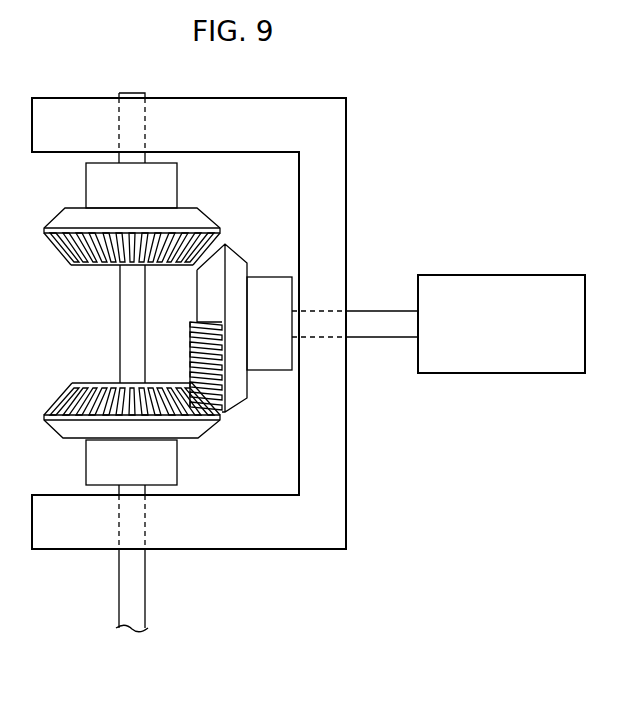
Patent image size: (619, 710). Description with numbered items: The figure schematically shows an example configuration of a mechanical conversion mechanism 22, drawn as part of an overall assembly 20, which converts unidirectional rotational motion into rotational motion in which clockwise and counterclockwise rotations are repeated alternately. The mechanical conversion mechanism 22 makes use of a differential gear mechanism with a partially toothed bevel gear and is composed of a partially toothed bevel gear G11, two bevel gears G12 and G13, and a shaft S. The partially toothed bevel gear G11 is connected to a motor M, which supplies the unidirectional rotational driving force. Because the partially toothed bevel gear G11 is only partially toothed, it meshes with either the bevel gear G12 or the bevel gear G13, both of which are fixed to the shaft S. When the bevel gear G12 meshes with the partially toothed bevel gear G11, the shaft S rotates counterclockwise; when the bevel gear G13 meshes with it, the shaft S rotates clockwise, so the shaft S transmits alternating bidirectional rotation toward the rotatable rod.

The drive device 20 is at (534, 102).
The mechanical conversion mechanism 22 is at (345, 640).
The partially toothed bevel gear G11 is at (268, 285).
The bevel gear G12 is at (173, 187).
The bevel gear G13 is at (173, 466).
The shaft S is at (142, 610).
The motor M is at (503, 285).